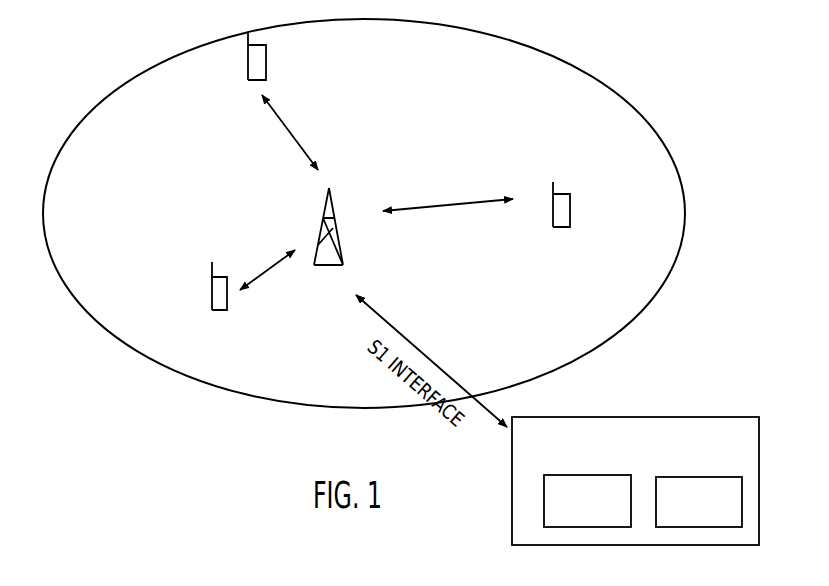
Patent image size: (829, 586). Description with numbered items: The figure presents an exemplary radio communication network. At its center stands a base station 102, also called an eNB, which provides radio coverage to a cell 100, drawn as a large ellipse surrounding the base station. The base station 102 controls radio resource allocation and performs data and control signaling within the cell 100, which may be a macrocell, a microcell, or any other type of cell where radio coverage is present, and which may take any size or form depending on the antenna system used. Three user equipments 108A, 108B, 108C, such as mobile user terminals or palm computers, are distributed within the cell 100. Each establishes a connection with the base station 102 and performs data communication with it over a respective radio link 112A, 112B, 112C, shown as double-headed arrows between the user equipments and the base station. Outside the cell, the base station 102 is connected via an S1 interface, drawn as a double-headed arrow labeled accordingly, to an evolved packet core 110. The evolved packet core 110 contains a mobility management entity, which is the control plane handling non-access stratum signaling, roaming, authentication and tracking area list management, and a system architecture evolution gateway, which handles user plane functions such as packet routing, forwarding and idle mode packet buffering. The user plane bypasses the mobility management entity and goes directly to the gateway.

The cell 100 is at (594, 78).
The base station 102 is at (337, 228).
The user equipment 108A is at (568, 226).
The user equipment 108B is at (227, 310).
The user equipment 108C is at (266, 80).
The evolved packet core 110 is at (556, 416).
The radio link 112A is at (429, 208).
The radio link 112B is at (275, 265).
The radio link 112C is at (277, 120).